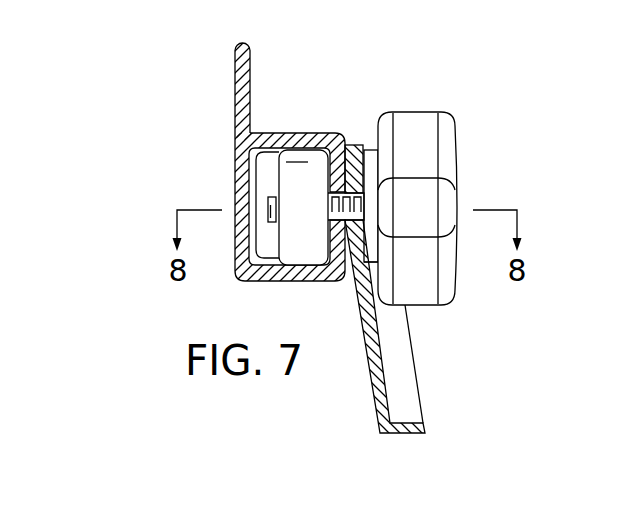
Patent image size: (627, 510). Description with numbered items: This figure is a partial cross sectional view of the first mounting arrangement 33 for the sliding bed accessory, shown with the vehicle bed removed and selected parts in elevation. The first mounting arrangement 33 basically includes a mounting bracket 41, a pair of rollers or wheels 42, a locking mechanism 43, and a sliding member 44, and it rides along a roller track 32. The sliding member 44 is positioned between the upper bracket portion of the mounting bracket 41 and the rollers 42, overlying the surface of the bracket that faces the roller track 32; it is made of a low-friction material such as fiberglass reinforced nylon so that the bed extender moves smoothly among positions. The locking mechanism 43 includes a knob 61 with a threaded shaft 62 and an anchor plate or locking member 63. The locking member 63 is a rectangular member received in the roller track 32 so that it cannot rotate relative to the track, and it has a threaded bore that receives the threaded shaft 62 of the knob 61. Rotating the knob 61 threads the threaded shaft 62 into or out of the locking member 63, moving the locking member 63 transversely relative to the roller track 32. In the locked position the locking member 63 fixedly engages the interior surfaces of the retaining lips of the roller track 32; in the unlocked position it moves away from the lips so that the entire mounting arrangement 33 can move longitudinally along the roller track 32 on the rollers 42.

The roller track 32 is at (226, 75).
The first mounting arrangement 33 is at (506, 90).
The mounting bracket 41 is at (424, 367).
The rollers 42 is at (271, 158).
The locking mechanism 43 is at (488, 184).
The sliding member 44 is at (350, 146).
The knob 61 is at (456, 142).
The threaded shaft 62 is at (266, 198).
The locking member 63 is at (298, 230).